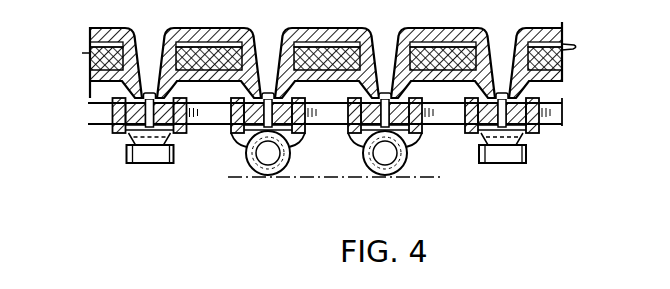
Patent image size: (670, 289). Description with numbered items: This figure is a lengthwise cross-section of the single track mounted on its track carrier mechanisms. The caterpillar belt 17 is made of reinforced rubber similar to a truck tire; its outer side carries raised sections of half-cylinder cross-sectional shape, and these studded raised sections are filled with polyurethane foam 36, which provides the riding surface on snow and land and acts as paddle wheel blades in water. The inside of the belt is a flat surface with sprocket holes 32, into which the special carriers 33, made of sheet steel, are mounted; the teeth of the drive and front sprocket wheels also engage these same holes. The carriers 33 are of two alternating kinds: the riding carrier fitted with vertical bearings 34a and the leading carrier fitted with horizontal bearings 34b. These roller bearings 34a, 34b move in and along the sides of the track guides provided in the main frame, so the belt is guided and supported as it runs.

The caterpillar belt 17 is at (325, 49).
The polyurethane foam 36 is at (209, 29).
The sprocket holes 32 is at (443, 88).
The carriers 33 is at (183, 128).
The vertical bearings 34a is at (290, 145).
The horizontal bearings 34b is at (175, 162).